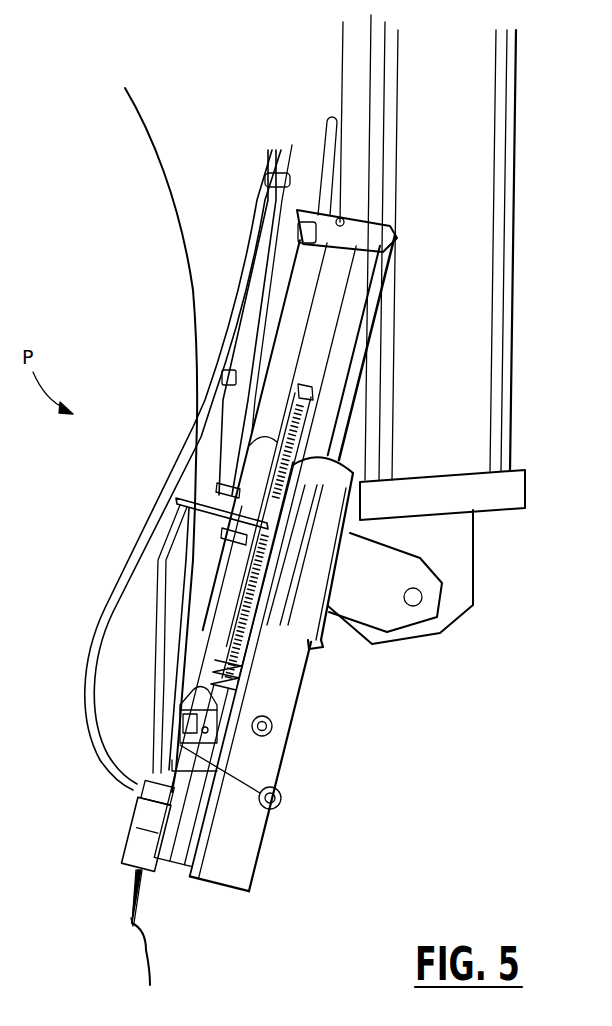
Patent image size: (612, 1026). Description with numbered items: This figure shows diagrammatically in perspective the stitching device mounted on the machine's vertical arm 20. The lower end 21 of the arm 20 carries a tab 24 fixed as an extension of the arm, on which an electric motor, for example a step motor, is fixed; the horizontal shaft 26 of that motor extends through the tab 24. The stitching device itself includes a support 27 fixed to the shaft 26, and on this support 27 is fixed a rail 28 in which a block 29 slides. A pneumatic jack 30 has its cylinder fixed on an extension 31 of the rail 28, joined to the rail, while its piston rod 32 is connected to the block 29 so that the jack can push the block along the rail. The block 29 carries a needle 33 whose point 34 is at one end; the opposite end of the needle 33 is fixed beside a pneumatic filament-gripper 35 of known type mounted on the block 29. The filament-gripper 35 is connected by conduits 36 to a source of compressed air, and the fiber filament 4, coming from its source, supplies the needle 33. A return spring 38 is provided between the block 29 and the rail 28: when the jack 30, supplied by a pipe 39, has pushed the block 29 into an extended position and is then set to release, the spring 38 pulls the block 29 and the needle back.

The fiber filament 4 is at (160, 168).
The vertical arm 20 is at (492, 104).
The lower end 21 is at (510, 490).
The tab 24 is at (460, 584).
The horizontal shaft 26 is at (422, 605).
The support 27 is at (387, 605).
The rail 28 is at (282, 706).
The block 29 is at (190, 822).
The pneumatic jack 30 is at (297, 312).
The extension 31 is at (333, 362).
The piston rod 32 is at (228, 562).
The needle 33 is at (135, 879).
The point 34 is at (130, 924).
The pneumatic filament-gripper 35 is at (130, 820).
The conduits 36 is at (82, 622).
The return spring 38 is at (247, 648).
The pipe 39 is at (268, 208).